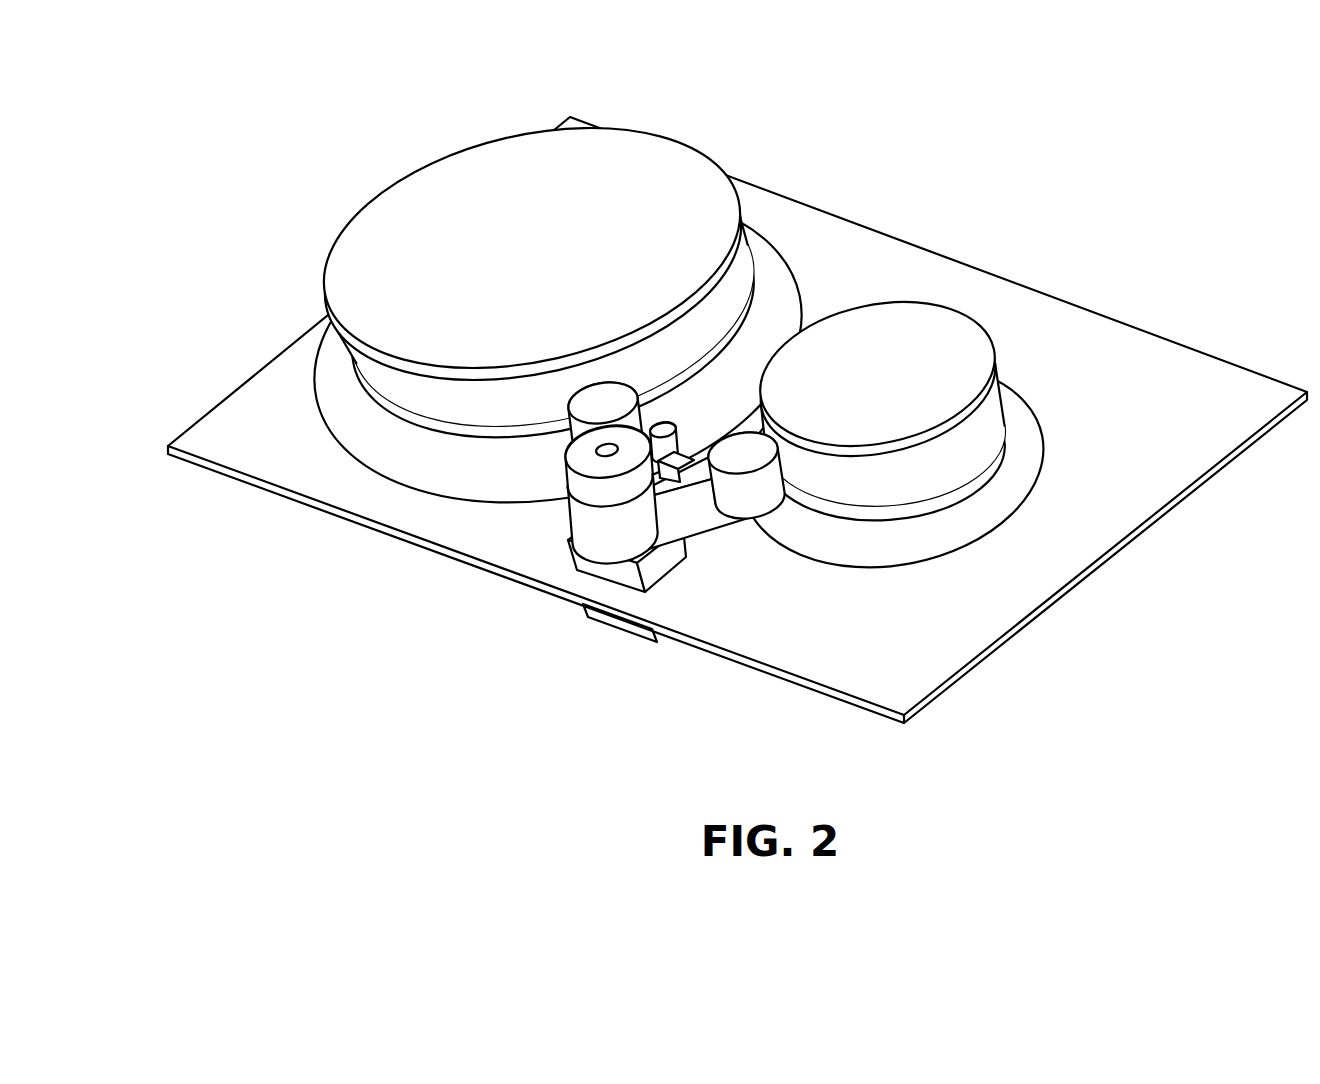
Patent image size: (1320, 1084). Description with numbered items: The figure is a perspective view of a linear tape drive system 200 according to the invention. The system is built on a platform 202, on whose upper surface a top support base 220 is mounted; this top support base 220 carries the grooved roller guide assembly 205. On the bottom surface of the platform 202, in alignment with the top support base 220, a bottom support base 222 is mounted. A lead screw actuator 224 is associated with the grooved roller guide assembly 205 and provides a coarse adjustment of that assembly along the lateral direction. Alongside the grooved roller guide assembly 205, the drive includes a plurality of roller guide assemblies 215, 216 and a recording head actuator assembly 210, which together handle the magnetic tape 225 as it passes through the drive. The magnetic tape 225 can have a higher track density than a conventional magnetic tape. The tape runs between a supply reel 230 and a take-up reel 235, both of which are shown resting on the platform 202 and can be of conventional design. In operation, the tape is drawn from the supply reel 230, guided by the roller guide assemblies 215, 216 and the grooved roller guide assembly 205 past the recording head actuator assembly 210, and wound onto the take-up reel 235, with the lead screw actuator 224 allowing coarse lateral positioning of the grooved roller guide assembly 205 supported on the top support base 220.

The linear tape drive system 200 is at (737, 400).
The platform 202 is at (1080, 347).
The grooved roller guide assembly 205 is at (597, 486).
The recording head actuator assembly 210 is at (698, 482).
The roller guide assembly 215 is at (740, 458).
The roller guide assembly 216 is at (590, 405).
The top support base 220 is at (607, 570).
The bottom support base 222 is at (605, 622).
The lead screw actuator 224 is at (650, 403).
The magnetic tape 225 is at (690, 513).
The supply reel 230 is at (405, 262).
The take-up reel 235 is at (918, 320).